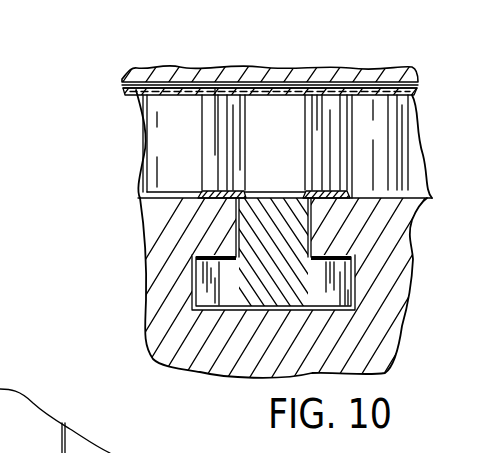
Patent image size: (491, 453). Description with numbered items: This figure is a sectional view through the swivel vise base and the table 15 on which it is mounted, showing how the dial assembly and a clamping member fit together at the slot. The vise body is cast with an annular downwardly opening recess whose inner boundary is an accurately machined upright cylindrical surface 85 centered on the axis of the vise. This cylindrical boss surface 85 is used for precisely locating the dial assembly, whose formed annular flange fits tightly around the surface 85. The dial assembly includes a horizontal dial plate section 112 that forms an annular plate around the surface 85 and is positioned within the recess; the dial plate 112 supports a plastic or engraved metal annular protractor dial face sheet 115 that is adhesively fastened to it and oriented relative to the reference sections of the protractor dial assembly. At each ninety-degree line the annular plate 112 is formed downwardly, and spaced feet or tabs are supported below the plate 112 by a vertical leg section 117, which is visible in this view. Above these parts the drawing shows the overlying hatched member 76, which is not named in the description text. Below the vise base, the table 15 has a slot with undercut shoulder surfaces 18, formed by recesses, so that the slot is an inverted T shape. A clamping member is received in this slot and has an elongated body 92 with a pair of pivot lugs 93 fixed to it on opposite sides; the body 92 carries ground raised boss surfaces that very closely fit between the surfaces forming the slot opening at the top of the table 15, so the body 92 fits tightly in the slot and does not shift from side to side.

The table 15 is at (173, 336).
The undercut shoulder surfaces 18 is at (238, 251).
The cover plate 76 is at (231, 65).
The cylindrical surface 85 is at (168, 117).
The elongated body 92 is at (287, 298).
The pivot lugs 93 is at (218, 279).
The dial plate section 112 is at (130, 89).
The protractor dial face sheet 115 is at (123, 83).
The vertical leg section 117 is at (218, 133).